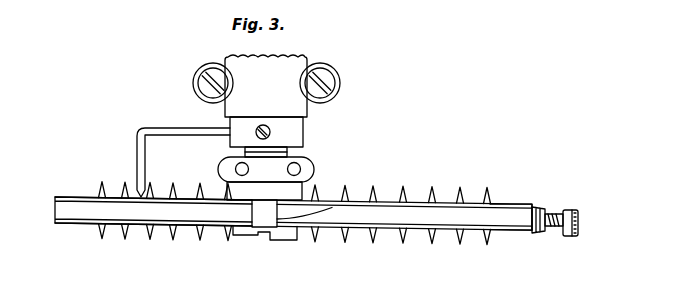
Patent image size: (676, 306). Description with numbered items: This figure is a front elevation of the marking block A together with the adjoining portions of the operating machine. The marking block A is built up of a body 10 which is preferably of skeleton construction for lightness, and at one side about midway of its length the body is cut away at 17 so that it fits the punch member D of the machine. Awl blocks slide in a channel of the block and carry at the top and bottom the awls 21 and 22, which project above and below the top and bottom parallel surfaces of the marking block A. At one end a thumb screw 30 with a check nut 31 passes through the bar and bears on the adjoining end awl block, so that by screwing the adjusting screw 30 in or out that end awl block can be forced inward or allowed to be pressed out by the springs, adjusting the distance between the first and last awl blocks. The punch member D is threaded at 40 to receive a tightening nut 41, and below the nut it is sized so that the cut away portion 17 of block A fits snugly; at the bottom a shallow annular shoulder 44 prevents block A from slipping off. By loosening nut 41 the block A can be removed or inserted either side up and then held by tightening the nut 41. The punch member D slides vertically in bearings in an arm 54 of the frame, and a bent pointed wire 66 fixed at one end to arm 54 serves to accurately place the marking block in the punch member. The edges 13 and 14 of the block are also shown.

The body 10 is at (377, 210).
The upper bar edge 13 is at (66, 196).
The lower bar edge 14 is at (66, 224).
The cut away portion 17 is at (327, 198).
The awls 21 is at (487, 189).
The awls 22 is at (148, 239).
The thumb screw 30 is at (579, 222).
The check nut 31 is at (537, 206).
The threaded portion 40 is at (300, 152).
The tightening nut 41 is at (315, 170).
The annular shoulder 44 is at (285, 241).
The arm 54 is at (244, 56).
The bent pointed wire 66 is at (147, 128).
The punch member D is at (245, 151).
The marking block A is at (450, 229).